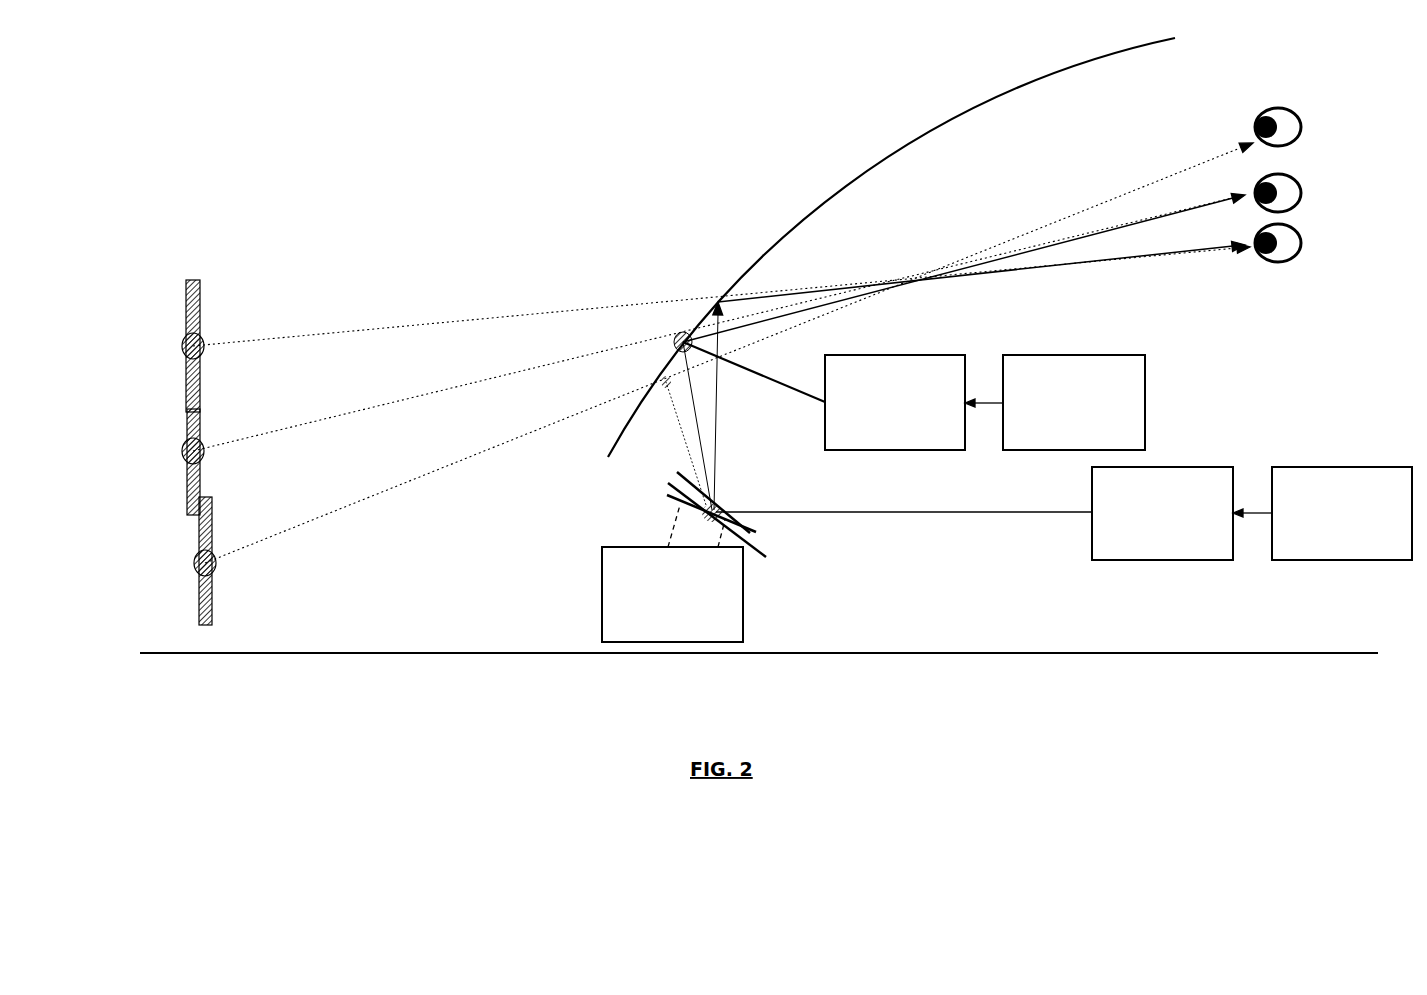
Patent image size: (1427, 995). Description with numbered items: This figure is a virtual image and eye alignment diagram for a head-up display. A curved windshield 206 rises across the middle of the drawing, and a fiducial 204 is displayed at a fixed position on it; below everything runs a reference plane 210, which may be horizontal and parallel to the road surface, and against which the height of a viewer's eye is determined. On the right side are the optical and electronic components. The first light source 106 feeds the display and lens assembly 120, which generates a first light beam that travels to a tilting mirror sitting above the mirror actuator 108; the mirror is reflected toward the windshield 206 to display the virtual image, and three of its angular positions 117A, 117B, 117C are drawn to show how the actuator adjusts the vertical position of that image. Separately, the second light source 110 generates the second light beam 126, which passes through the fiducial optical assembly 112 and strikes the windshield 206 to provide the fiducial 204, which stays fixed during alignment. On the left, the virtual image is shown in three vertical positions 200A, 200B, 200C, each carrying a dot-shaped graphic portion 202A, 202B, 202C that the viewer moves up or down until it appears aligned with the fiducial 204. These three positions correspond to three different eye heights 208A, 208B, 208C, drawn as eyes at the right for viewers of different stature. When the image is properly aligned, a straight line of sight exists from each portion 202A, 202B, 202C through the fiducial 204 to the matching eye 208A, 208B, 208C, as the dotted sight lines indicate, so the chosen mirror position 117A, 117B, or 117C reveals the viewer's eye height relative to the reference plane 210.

The first light source 106 is at (1343, 467).
The mirror actuator 108 is at (745, 588).
The second light source 110 is at (1073, 357).
The fiducial optical assembly 112 is at (897, 357).
The mirror position 117A is at (744, 538).
The mirror position 117B is at (752, 544).
The mirror position 117C is at (748, 532).
The display and lens assembly 120 is at (1163, 467).
The second light beam 126 is at (770, 376).
The virtual image 200A is at (190, 298).
The virtual image 200B is at (190, 413).
The virtual image 200C is at (200, 530).
The portion of the virtual image 202A is at (186, 344).
The portion of the virtual image 202B is at (186, 450).
The portion of the virtual image 202C is at (197, 562).
The fiducial 204 is at (682, 336).
The windshield 206 is at (850, 184).
The viewer's eye 208A is at (1301, 234).
The viewer's eye 208B is at (1301, 184).
The viewer's eye 208C is at (1296, 108).
The reference plane 210 is at (540, 653).